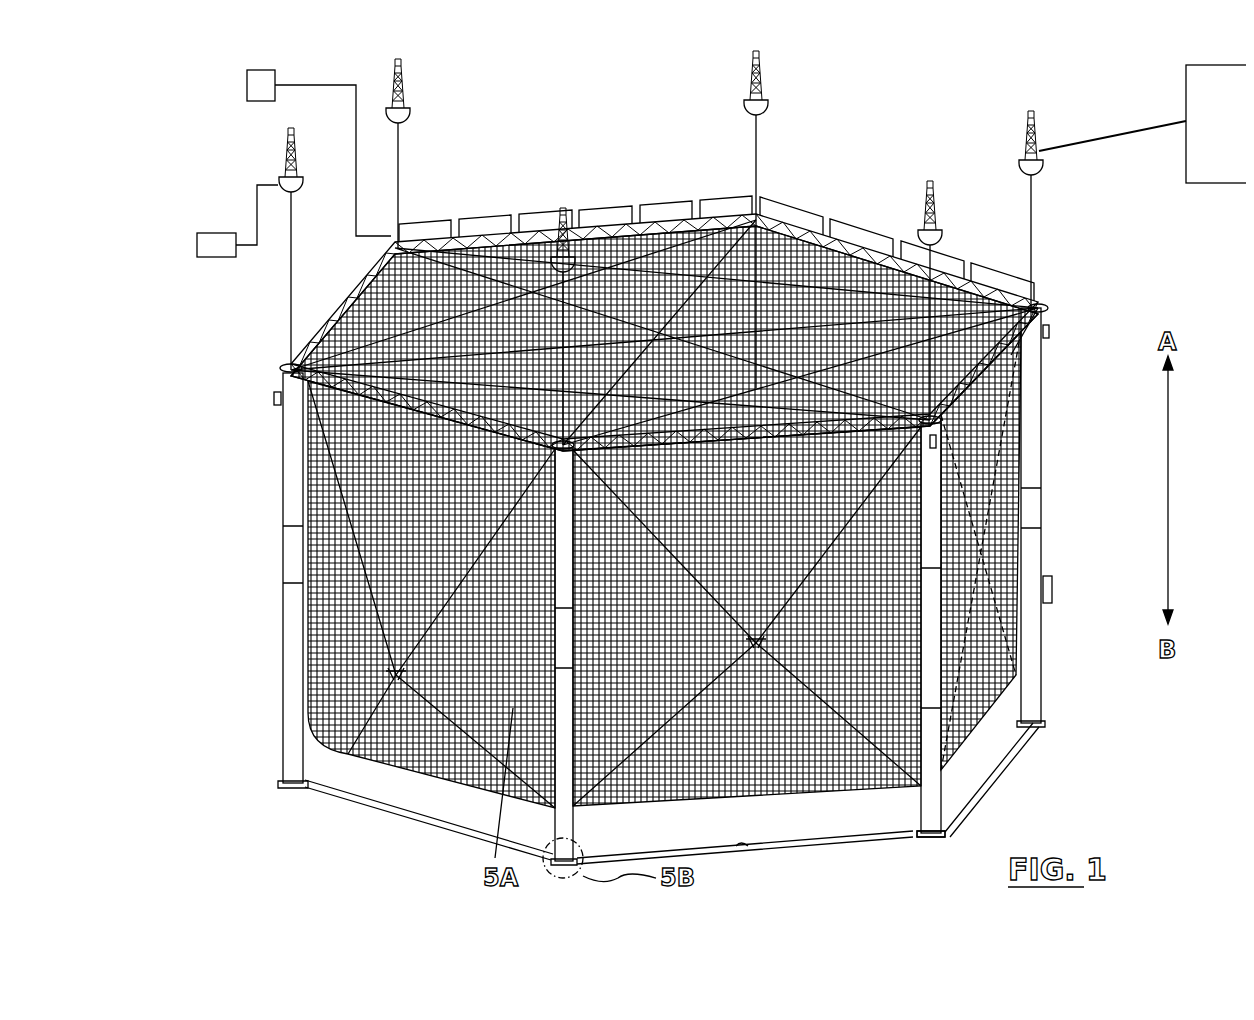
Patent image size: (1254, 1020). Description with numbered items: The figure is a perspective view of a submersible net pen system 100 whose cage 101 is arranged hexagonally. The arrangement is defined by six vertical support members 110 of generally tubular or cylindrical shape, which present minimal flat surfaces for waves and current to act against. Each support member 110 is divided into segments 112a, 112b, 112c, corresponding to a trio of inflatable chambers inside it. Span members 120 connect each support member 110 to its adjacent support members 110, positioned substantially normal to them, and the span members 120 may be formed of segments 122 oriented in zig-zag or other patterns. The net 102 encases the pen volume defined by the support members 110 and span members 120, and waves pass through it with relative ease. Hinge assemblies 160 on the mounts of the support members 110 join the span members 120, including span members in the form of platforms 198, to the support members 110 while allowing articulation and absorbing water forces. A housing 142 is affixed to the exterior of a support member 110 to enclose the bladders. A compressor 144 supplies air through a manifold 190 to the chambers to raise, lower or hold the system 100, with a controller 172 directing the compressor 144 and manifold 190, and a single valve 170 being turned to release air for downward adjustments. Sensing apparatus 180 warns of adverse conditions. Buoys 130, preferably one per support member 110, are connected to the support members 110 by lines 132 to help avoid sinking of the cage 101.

The submersible pen system 100 is at (1110, 278).
The cage 101 is at (260, 630).
The net 102 is at (384, 766).
The support member 110 is at (207, 500).
The segment of support member 112a is at (275, 490).
The segment of support member 112b is at (275, 549).
The segment of support member 112c is at (275, 606).
The span member 120 is at (405, 812).
The segment of span member 122 is at (717, 842).
The buoy 130 is at (270, 158).
The line 132 is at (283, 323).
The housing 142 is at (1044, 590).
The compressor 144 is at (1142, 124).
The hinge assembly 160 is at (915, 845).
The valve 170 is at (238, 78).
The controller 172 is at (198, 249).
The sensing apparatus 180 is at (266, 391).
The manifold 190 is at (270, 370).
The platform 198 is at (1003, 347).